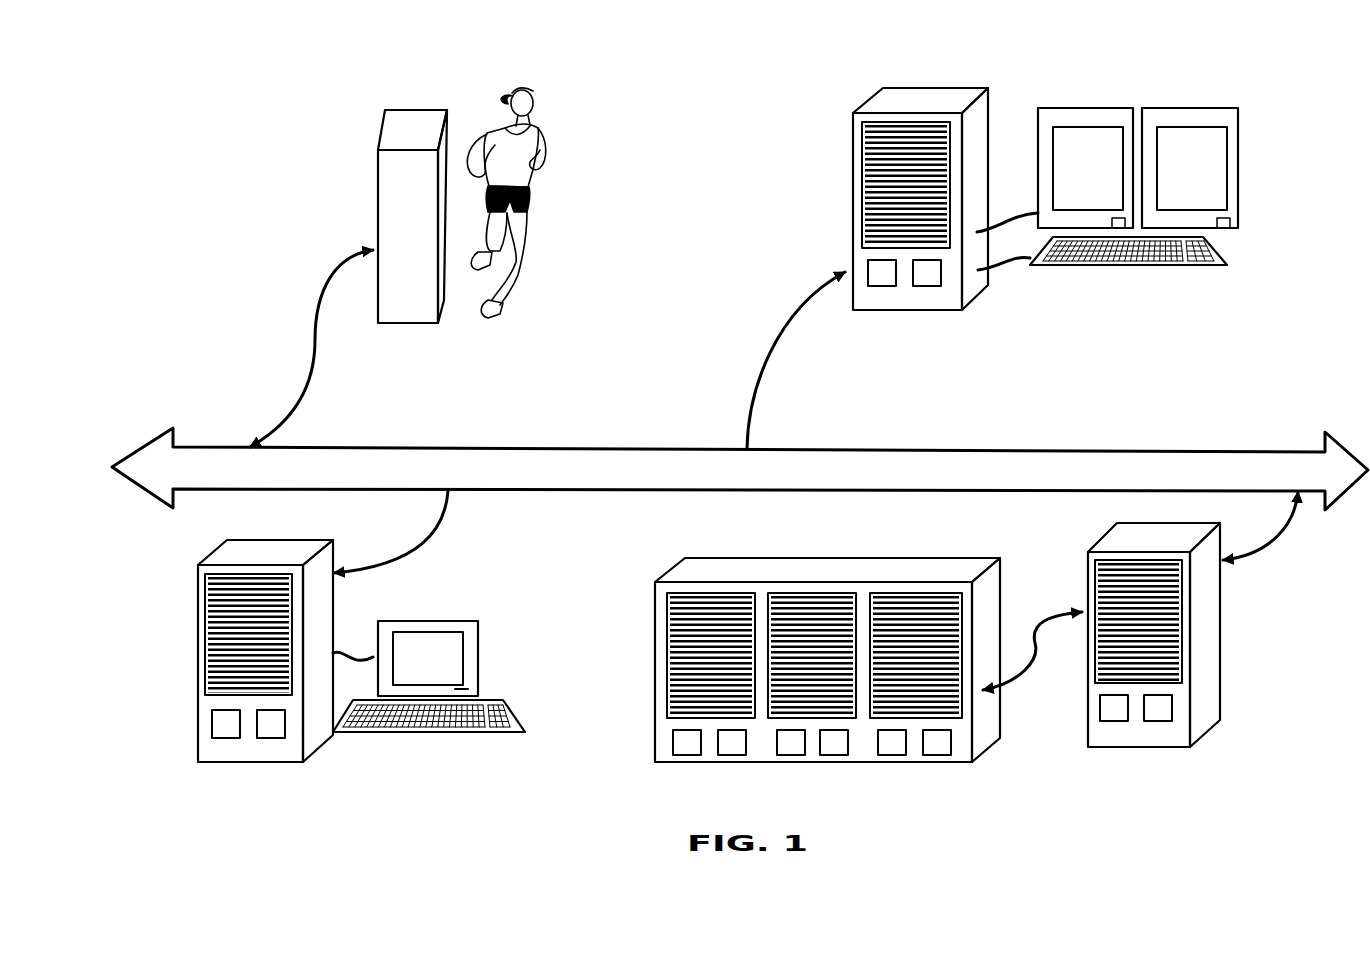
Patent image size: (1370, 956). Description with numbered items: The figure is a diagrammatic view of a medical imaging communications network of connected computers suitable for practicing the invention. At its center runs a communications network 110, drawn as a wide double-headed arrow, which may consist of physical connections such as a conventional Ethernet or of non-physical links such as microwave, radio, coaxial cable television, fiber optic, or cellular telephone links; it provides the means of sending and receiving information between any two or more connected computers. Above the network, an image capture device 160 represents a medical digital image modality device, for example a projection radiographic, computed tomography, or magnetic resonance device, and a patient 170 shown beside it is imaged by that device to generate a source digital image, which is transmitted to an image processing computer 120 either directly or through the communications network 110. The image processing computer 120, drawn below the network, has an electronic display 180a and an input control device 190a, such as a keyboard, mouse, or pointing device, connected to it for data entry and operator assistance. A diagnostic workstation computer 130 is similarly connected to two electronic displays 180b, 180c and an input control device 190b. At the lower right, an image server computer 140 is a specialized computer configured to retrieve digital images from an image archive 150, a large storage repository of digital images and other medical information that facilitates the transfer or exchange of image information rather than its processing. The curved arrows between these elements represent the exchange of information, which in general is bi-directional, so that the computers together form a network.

The communications network 110 is at (1207, 451).
The image processing computer 120 is at (258, 538).
The diagnostic workstation computer 130 is at (852, 185).
The image server computer 140 is at (1222, 668).
The image archive 150 is at (940, 558).
The image capture device 160 is at (395, 108).
The patient 170 is at (547, 148).
The electronic display 180a is at (427, 618).
The electronic display 180b is at (1077, 108).
The electronic display 180c is at (1183, 108).
The input control device 190a is at (453, 733).
The input control device 190b is at (1192, 267).